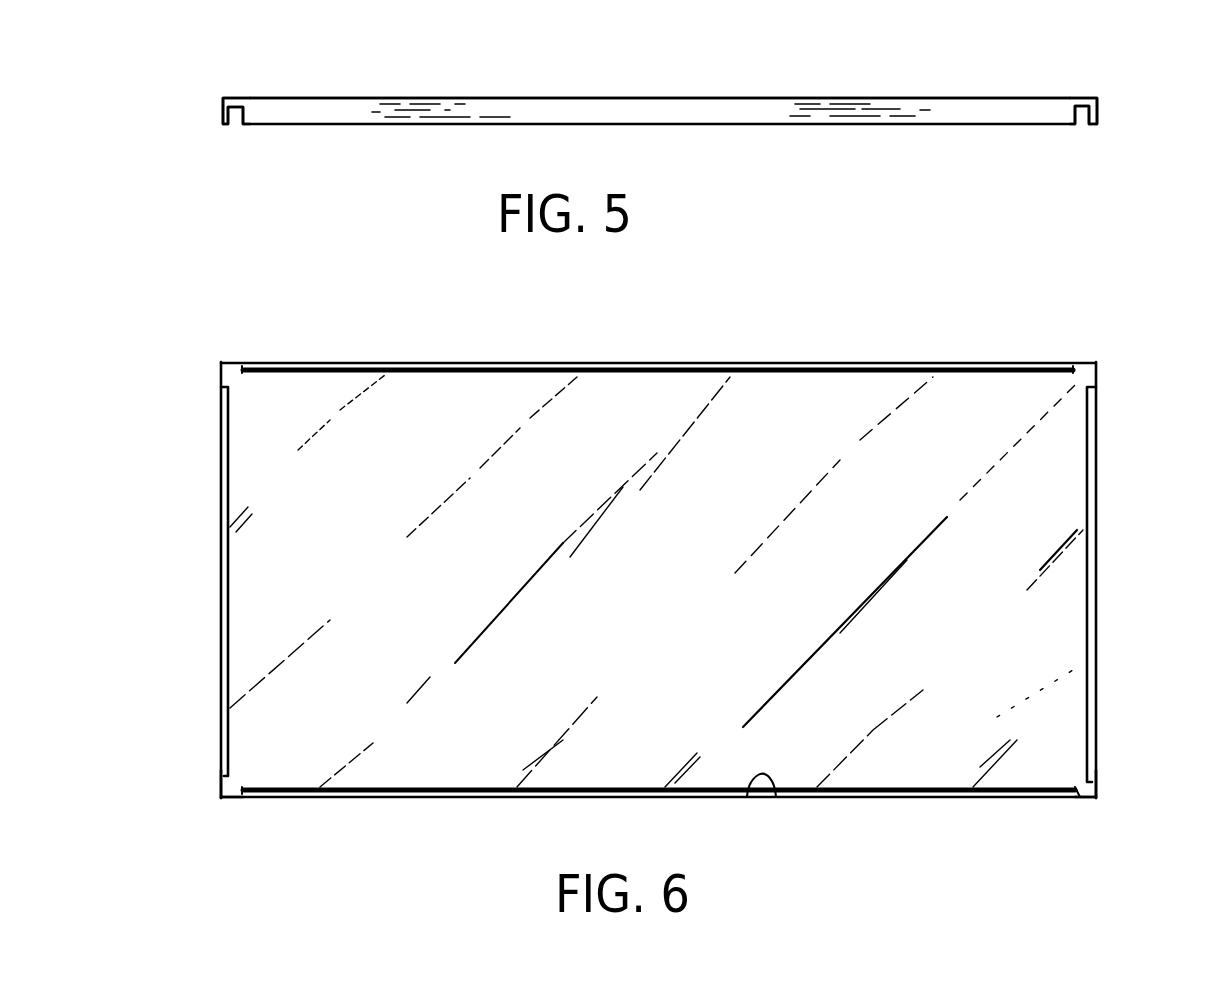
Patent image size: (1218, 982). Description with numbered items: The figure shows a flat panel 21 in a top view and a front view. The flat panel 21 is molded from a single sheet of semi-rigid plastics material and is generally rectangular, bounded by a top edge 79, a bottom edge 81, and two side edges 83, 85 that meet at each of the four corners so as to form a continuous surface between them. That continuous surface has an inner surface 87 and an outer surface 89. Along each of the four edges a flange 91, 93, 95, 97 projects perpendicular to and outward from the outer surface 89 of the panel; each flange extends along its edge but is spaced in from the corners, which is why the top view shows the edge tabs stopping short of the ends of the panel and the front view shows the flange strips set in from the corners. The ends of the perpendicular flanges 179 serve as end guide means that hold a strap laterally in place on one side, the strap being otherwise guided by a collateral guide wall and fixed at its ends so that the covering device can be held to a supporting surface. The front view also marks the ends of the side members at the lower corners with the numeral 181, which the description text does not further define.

In FIG. 5, the flat panel 21 is at (212, 60).
In FIG. 6, the flat panel 21 is at (217, 332).
In FIG. 5, the top edge 79 is at (546, 98).
In FIG. 6, the top edge 79 is at (531, 362).
In FIG. 6, the bottom edge 81 is at (570, 798).
In FIG. 6, the side edge 83 is at (219, 588).
In FIG. 6, the side edge 85 is at (1098, 620).
In FIG. 5, the inner surface 87 is at (699, 98).
In FIG. 5, the outer surface 89 is at (826, 125).
In FIG. 6, the outer surface 89 is at (963, 406).
In FIG. 5, the flange 91 is at (218, 115).
In FIG. 6, the flange 91 is at (226, 498).
In FIG. 5, the flange 93 is at (370, 112).
In FIG. 6, the flange 93 is at (700, 372).
In FIG. 5, the flange 95 is at (1100, 112).
In FIG. 6, the flange 95 is at (1088, 496).
In FIG. 6, the flange 97 is at (776, 797).
In FIG. 6, the perpendicular flange 179 is at (236, 800).
In FIG. 6, the side member end 181 is at (220, 784).